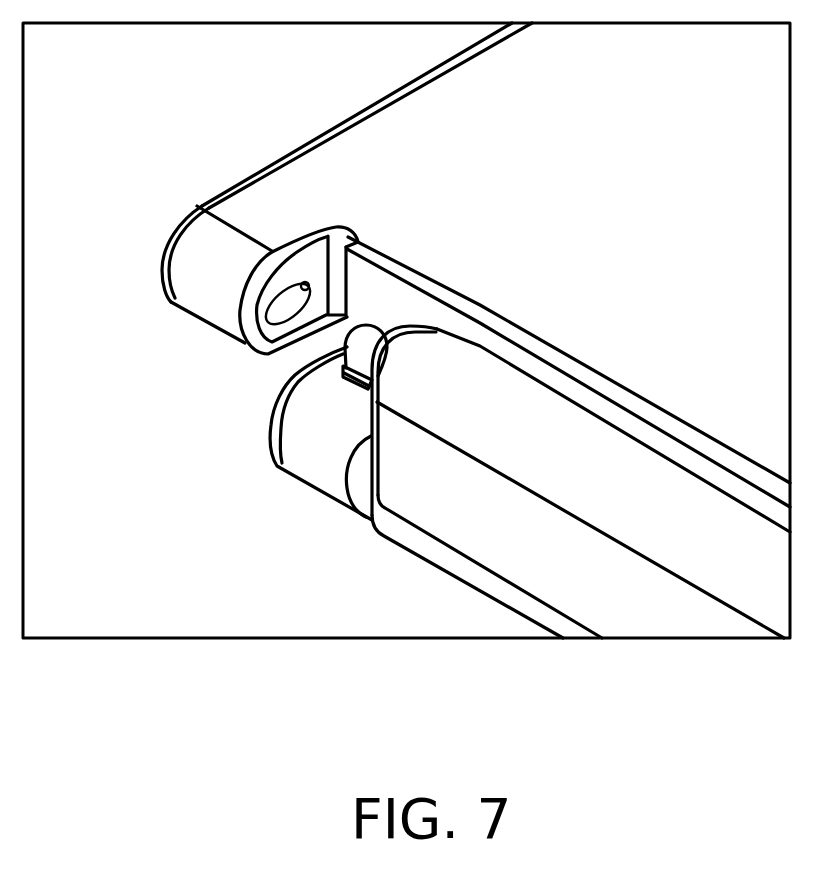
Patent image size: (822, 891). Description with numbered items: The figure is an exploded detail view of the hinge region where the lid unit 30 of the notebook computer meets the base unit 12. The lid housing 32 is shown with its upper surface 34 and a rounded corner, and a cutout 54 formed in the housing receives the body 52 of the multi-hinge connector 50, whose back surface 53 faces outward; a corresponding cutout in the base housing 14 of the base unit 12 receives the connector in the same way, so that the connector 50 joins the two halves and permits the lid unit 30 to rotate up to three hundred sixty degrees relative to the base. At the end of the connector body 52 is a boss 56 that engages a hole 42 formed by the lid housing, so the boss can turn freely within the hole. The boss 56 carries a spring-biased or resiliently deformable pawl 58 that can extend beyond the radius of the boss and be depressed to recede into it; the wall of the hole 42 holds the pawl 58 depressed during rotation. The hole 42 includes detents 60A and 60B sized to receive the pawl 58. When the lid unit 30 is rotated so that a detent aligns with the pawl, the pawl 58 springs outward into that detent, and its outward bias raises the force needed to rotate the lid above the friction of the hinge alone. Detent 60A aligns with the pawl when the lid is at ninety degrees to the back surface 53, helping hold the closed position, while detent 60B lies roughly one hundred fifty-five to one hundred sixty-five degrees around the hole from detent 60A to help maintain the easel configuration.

The base unit 12 is at (265, 471).
The base housing 14 is at (316, 468).
The lid unit 30 is at (197, 180).
The lid housing 32 is at (275, 215).
The upper surface 34 is at (602, 167).
The hole 42 is at (288, 314).
The multi-hinge connector 50 is at (398, 559).
The body 52 is at (513, 400).
The back surface 53 is at (481, 524).
The cutout 54 is at (350, 240).
The boss 56 is at (375, 338).
The pawl 58 is at (345, 378).
The detent 60A is at (265, 331).
The detent 60B is at (357, 286).